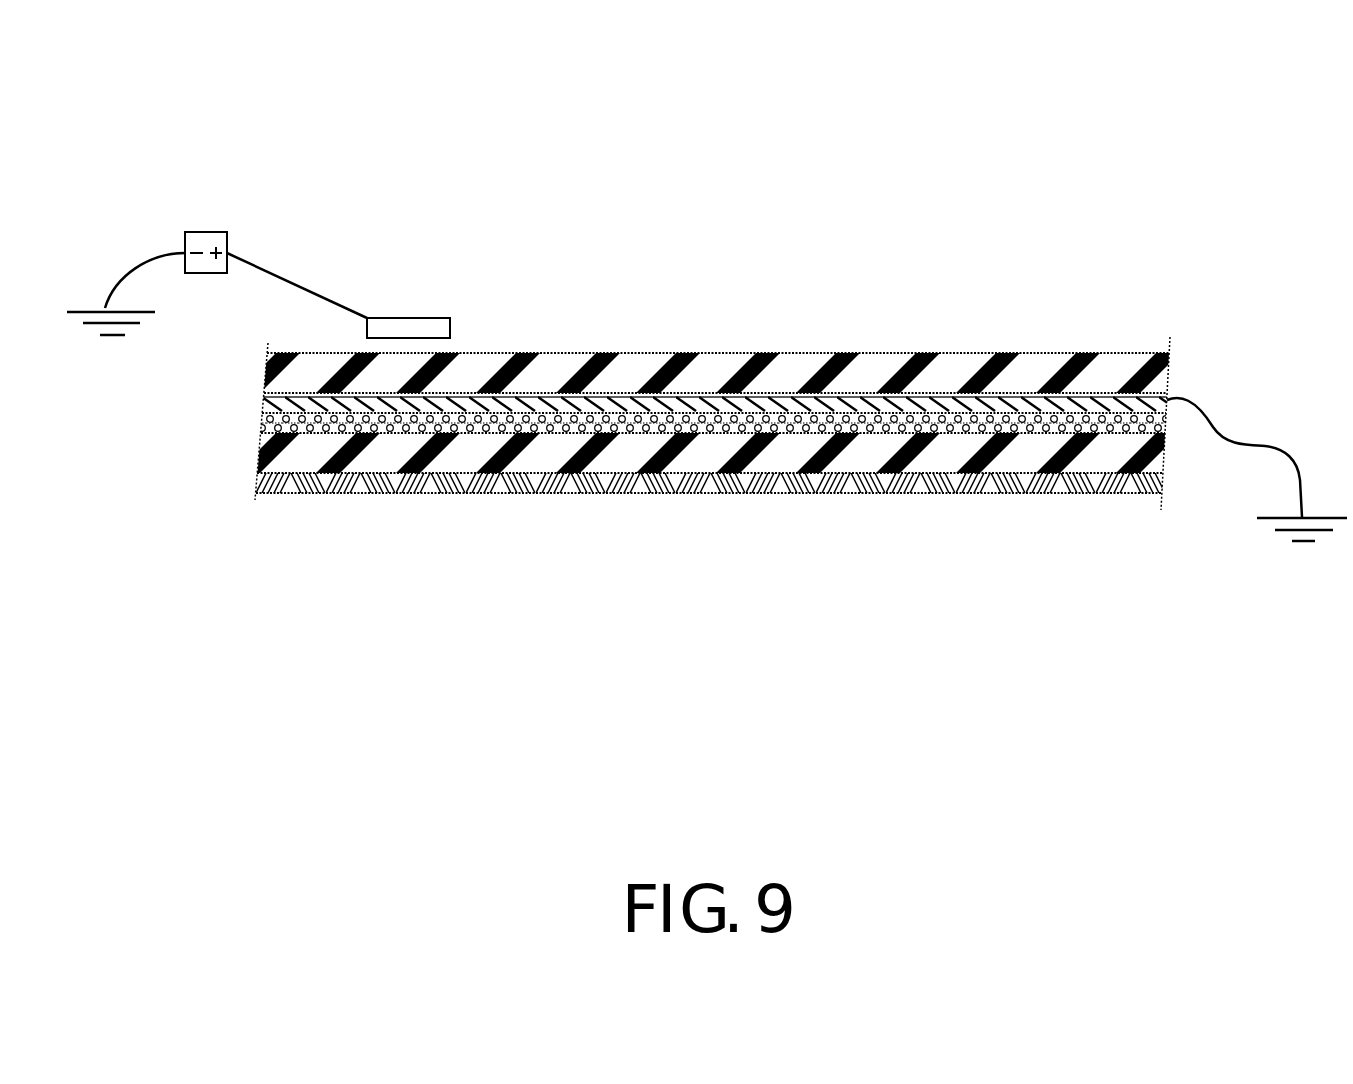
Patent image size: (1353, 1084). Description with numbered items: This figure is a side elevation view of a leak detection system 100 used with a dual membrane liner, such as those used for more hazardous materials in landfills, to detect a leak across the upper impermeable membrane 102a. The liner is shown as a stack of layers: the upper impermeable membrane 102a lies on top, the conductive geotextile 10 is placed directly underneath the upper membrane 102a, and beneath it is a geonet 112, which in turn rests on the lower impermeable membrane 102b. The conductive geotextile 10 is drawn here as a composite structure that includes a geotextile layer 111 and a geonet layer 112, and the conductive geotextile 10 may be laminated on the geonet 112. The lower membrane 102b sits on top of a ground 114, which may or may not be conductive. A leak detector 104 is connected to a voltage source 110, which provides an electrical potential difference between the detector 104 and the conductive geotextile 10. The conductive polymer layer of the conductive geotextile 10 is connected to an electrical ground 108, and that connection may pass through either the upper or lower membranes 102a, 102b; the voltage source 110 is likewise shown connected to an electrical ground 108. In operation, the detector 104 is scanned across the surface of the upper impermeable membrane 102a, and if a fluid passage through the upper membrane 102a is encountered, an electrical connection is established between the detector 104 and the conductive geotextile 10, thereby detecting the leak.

The conductive geotextile 10 is at (1165, 397).
The leak detection system 100 is at (1084, 228).
The upper impermeable membrane 102a is at (885, 375).
The lower impermeable membrane 102b is at (644, 455).
The leak detector 104 is at (395, 318).
The electrical ground 108 is at (100, 307).
The voltage source 110 is at (198, 232).
The geotextile layer 111 is at (277, 403).
The geonet 112 is at (270, 423).
The ground 114 is at (262, 485).